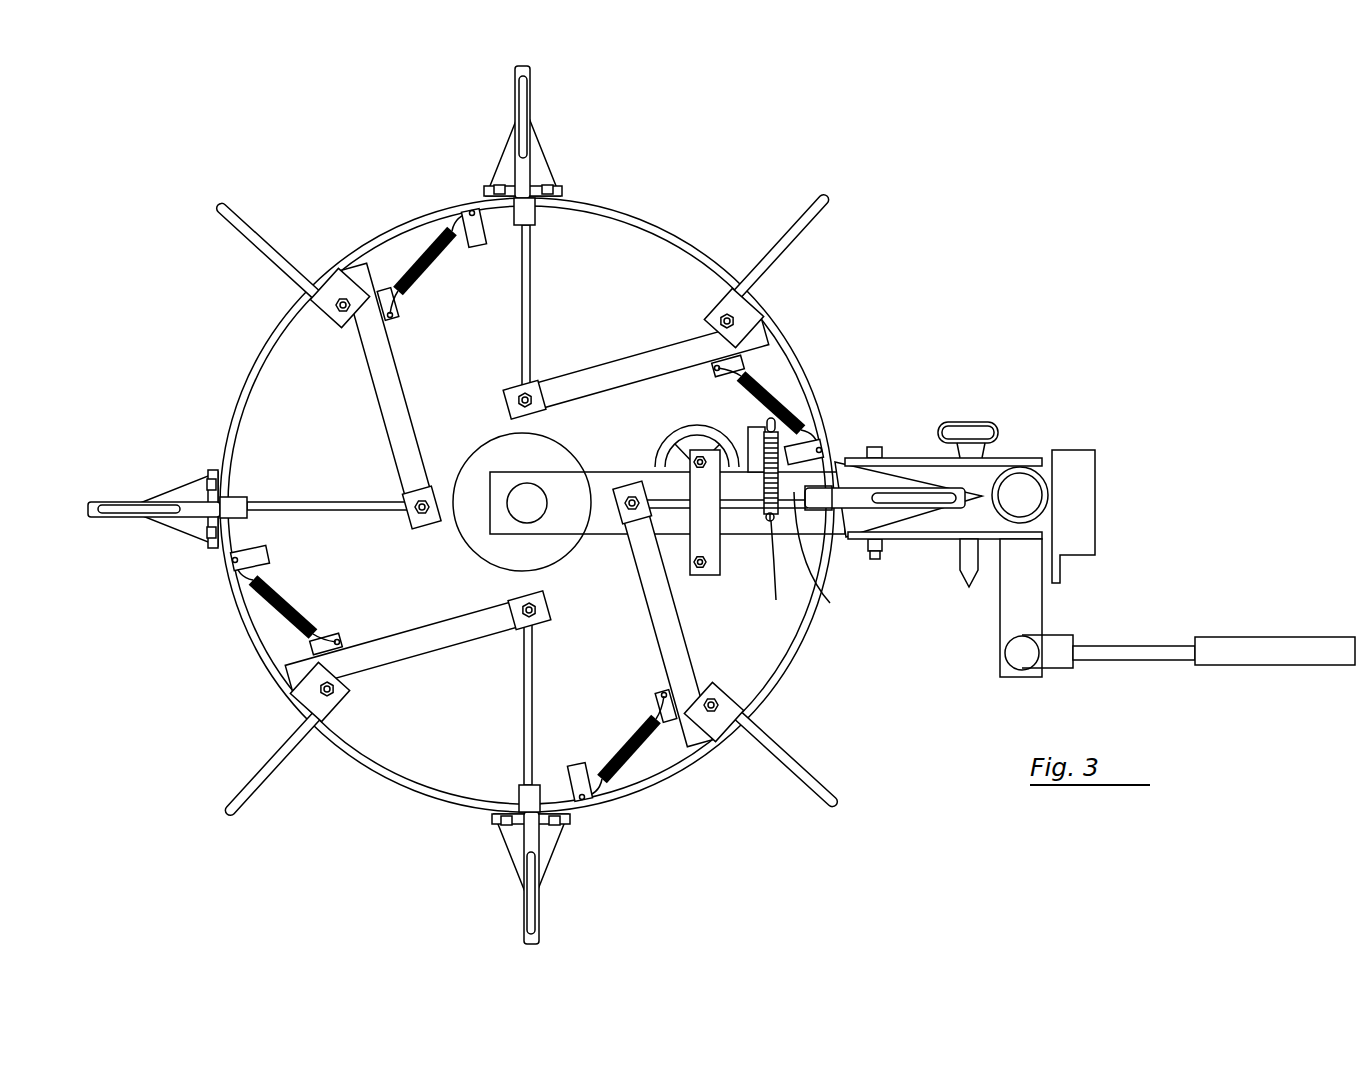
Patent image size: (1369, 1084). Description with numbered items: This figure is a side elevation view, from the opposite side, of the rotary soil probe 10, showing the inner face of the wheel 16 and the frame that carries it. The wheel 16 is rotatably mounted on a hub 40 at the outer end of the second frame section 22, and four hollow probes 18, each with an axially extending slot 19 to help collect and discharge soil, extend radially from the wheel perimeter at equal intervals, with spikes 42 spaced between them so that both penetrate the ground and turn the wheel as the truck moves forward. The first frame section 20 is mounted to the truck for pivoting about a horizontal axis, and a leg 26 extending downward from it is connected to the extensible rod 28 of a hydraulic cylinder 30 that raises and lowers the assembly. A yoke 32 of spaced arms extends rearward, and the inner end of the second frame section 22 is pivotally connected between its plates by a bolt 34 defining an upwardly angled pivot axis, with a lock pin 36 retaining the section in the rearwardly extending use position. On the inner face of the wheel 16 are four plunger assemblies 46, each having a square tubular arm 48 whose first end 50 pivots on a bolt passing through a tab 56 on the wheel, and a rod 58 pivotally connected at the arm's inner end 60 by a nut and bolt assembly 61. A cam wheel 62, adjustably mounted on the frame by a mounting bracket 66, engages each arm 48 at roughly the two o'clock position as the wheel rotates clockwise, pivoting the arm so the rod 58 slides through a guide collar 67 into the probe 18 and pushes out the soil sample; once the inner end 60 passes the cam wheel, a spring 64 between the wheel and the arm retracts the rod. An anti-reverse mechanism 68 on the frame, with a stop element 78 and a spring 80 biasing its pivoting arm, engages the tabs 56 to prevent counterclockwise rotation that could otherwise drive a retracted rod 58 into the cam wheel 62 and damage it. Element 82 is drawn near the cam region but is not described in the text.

The rotary soil probe 10 is at (716, 499).
The wheel 16 is at (630, 222).
The probe 18 is at (525, 178).
The axially extending slot 19 is at (523, 112).
The first frame section 20 is at (1023, 440).
The second frame section 22 is at (795, 465).
The leg 26 is at (998, 617).
The extensible rod 28 is at (1130, 646).
The hydraulic cylinder 30 is at (1279, 637).
The yoke 32 is at (966, 420).
The bolt 34 is at (886, 553).
The lock pin 36 is at (1016, 466).
The hub 40 is at (526, 512).
The spike 42 is at (222, 202).
The plunger assembly 46 is at (566, 486).
The arm 48 is at (664, 352).
The first end of arm 50 is at (363, 280).
The tab 56 is at (740, 302).
The rod 58 is at (529, 258).
The inner end of arm 60 is at (520, 388).
The nut and bolt assembly 61 is at (521, 400).
The cam wheel 62 is at (690, 447).
The spring 64 is at (447, 228).
The mounting bracket 66 is at (722, 570).
The guide collar 67 is at (531, 205).
The anti-reverse mechanism 68 is at (748, 436).
The stop element 78 is at (783, 420).
The spring 80 is at (768, 522).
The cable 82 is at (796, 550).